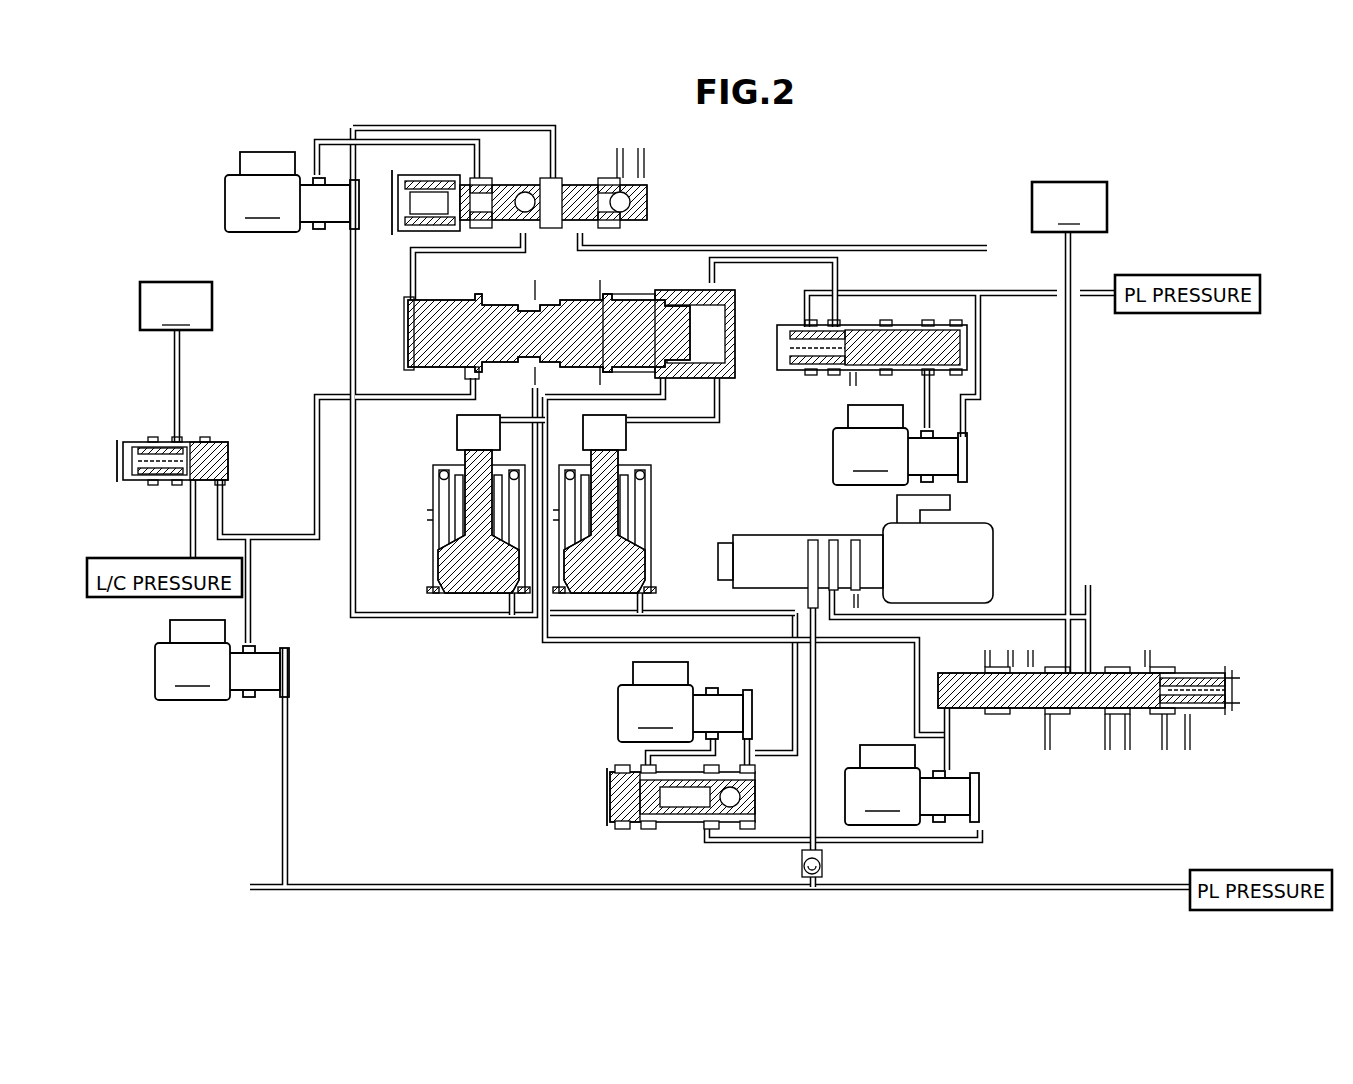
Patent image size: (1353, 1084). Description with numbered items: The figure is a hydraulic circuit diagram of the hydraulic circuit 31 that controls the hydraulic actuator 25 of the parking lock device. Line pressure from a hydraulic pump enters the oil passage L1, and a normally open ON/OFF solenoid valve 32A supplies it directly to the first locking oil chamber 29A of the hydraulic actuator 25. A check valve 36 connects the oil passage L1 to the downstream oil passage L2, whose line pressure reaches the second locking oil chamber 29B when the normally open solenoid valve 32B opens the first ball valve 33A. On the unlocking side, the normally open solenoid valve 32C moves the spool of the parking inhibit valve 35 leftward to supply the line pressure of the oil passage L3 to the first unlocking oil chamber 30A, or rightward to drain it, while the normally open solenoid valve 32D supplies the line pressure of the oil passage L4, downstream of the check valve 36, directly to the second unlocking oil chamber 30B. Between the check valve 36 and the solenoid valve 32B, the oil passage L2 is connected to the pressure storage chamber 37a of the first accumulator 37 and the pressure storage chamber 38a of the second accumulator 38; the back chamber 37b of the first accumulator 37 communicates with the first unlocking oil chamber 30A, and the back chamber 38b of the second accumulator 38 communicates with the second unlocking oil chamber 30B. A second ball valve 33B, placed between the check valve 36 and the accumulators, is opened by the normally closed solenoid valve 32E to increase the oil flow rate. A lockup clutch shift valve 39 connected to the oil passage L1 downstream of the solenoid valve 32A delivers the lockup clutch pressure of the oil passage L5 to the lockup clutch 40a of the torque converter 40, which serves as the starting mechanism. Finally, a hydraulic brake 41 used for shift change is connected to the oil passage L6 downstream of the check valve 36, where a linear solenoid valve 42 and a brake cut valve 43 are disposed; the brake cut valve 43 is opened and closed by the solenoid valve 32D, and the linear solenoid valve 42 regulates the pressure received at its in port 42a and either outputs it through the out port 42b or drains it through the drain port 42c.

The hydraulic actuator 25 is at (585, 295).
The first locking oil chamber 29A is at (470, 372).
The second locking oil chamber 29B is at (410, 298).
The first unlocking oil chamber 30A is at (690, 327).
The second unlocking oil chamber 30B is at (637, 302).
The hydraulic circuit 31 is at (957, 198).
The solenoid valve 32A is at (222, 660).
The solenoid valve 32B is at (292, 192).
The solenoid valve 32C is at (900, 445).
The solenoid valve 32D is at (912, 785).
The solenoid valve 32E is at (685, 702).
The first ball valve 33A is at (590, 168).
The second ball valve 33B is at (614, 766).
The parking inhibit valve 35 is at (832, 381).
The check valve 36 is at (822, 866).
The first accumulator 37 is at (641, 504).
The pressure storage chamber 37a is at (647, 592).
The back chamber 37b is at (614, 433).
The second accumulator 38 is at (450, 514).
The pressure storage chamber 38a is at (440, 593).
The back chamber 38b is at (468, 447).
The lockup clutch shift valve 39 is at (197, 437).
The torque converter 40 is at (154, 264).
The lockup clutch 40a is at (158, 272).
The hydraulic brake 41 is at (1069, 207).
The linear solenoid valve 42 is at (855, 535).
The in port 42a is at (808, 558).
The out port 42b is at (833, 542).
The drain port 42c is at (857, 553).
The brake cut valve 43 is at (1115, 662).
The oil passage L1 is at (317, 478).
The oil passage L2 is at (455, 127).
The oil passage L3 is at (772, 262).
The oil passage L4 is at (546, 452).
The oil passage L5 is at (172, 408).
The oil passage L6 is at (1070, 440).